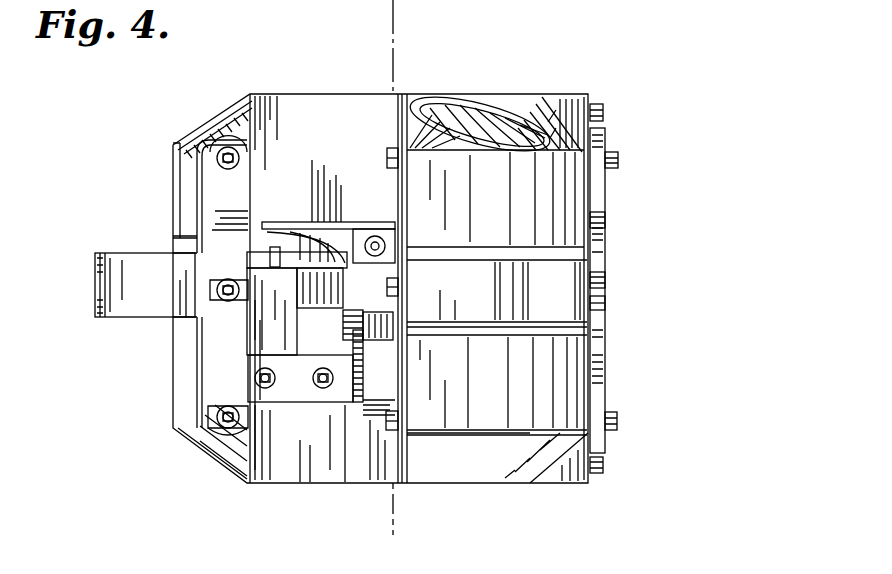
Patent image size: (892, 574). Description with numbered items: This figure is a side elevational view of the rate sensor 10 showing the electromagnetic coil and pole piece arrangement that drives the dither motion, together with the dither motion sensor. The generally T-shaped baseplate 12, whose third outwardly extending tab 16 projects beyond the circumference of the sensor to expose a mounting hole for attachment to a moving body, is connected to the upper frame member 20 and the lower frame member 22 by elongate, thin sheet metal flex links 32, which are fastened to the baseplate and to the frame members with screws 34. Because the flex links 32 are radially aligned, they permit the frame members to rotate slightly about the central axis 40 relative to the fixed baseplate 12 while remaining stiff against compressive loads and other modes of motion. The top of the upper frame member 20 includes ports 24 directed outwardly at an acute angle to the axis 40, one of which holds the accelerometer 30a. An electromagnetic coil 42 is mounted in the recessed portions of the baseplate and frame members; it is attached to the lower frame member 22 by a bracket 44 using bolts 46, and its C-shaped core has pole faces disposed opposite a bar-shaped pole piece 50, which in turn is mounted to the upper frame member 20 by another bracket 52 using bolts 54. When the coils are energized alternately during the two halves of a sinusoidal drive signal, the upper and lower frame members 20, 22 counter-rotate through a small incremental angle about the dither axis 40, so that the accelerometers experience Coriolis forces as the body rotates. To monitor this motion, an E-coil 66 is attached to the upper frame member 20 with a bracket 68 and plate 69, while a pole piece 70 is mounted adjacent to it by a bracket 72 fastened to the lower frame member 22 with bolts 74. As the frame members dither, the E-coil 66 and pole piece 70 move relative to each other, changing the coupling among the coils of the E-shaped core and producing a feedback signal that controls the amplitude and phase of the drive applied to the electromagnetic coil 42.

The rate sensor 10 is at (647, 151).
The baseplate 12 is at (92, 289).
The third outwardly extending tab 16 is at (110, 320).
The upper frame member 20 is at (566, 106).
The lower frame member 22 is at (517, 478).
The ports 24 is at (484, 98).
The accelerometer 30a is at (490, 128).
The flex links 32 is at (208, 187).
The screws 34 is at (208, 138).
The axis 40 is at (396, 16).
The electromagnetic coil 42 is at (262, 232).
The bracket 44 is at (303, 400).
The bolts 46 is at (250, 362).
The pole piece 50 is at (373, 330).
The bracket 52 is at (393, 227).
The bolts 54 is at (360, 227).
The E-coil 66 is at (606, 247).
The bracket 68 is at (604, 110).
The plate 69 is at (605, 205).
The pole piece 70 is at (605, 303).
The bracket 72 is at (605, 372).
The bolts 74 is at (619, 162).